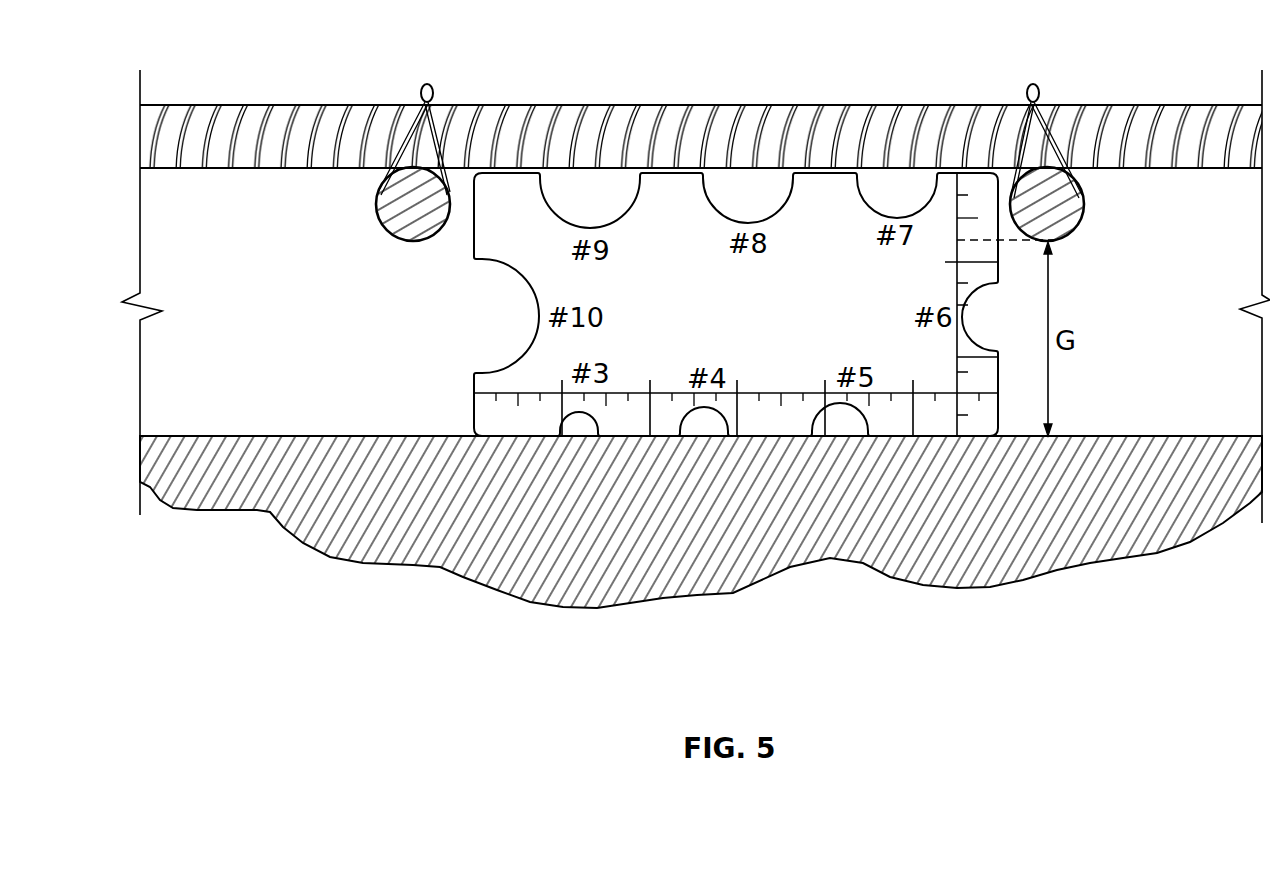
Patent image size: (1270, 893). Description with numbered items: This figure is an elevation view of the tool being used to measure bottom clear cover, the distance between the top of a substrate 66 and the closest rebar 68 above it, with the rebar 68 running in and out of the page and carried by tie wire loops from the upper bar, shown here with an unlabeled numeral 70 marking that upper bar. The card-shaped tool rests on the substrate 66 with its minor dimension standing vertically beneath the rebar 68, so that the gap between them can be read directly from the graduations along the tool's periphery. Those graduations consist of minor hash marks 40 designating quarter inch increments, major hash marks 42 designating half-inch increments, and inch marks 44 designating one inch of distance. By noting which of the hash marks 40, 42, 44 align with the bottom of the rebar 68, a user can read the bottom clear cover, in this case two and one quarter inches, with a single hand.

The rebar 70 is at (1147, 105).
The rebar 68 is at (410, 243).
The substrate 66 is at (342, 436).
The minor hash marks 40 is at (957, 240).
The major hash marks 42 is at (957, 218).
The inch marks 44 is at (962, 262).